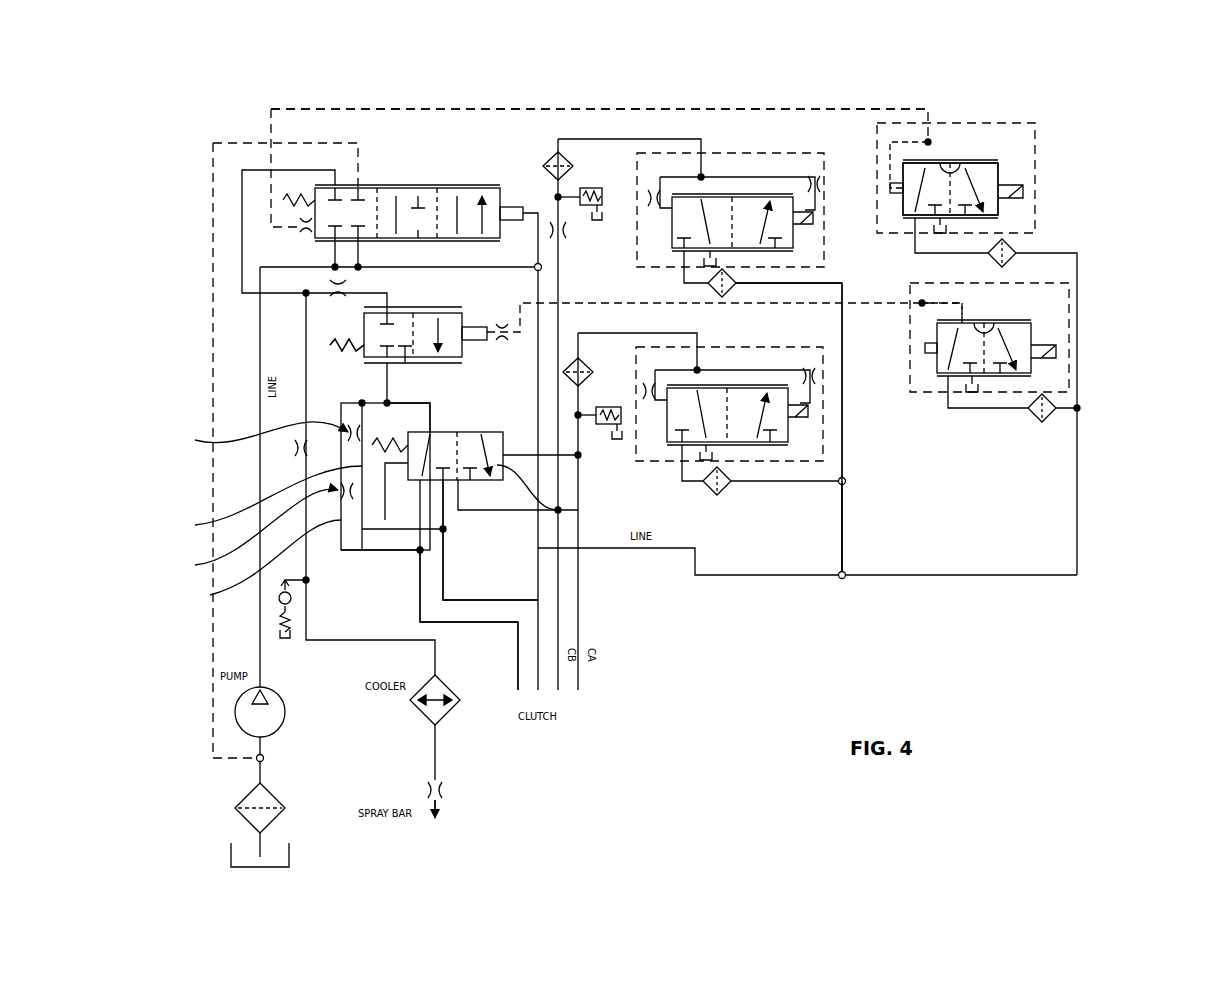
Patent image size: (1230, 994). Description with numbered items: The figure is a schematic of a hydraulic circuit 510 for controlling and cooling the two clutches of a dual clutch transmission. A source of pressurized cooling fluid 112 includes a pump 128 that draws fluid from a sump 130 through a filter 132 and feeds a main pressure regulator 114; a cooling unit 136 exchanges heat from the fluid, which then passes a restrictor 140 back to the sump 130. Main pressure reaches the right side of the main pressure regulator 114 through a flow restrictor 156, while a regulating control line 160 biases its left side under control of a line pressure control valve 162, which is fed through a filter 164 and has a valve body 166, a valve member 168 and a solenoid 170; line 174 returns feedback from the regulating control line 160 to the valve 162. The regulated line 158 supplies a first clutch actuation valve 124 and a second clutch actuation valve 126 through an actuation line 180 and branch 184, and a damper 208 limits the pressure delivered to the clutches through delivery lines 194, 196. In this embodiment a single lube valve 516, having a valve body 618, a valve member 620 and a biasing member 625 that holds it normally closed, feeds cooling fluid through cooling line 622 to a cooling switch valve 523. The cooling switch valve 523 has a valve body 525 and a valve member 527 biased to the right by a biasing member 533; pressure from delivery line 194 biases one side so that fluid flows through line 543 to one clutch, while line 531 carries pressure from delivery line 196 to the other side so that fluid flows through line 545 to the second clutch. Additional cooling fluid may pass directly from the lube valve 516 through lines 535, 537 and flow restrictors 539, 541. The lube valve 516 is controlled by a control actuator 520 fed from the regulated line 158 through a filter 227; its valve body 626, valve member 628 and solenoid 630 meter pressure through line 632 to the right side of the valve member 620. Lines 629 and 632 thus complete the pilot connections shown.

The source of pressurized cooling fluid 112 is at (180, 728).
The main pressure regulator 114 is at (432, 160).
The first clutch actuation valve 124 is at (825, 410).
The second clutch actuation valve 126 is at (742, 145).
The pump 128 is at (284, 712).
The sump 130 is at (262, 867).
The filter 132 is at (238, 797).
The cooling unit 136 is at (450, 712).
The restrictor 140 is at (445, 795).
The flow restrictor 156 is at (543, 222).
The regulated line 158 is at (705, 575).
The regulating control line 160 is at (315, 109).
The line pressure control valve 162 is at (1043, 168).
The filter 164 is at (1012, 245).
The valve body 166 is at (962, 163).
The valve member 168 is at (990, 172).
The solenoid 170 is at (1012, 195).
The line 174 is at (912, 142).
The actuation line 180 is at (842, 526).
The branch 184 is at (842, 438).
The delivery line 194 is at (612, 333).
The delivery line 196 is at (558, 287).
The damper 208 is at (580, 188).
The filter 227 is at (1036, 420).
The hydraulic circuit 510 is at (195, 128).
The lube valve 516 is at (410, 300).
The control actuator 520 is at (1090, 338).
The cooling switch valve 523 is at (482, 425).
The valve body 525 is at (458, 473).
The valve member 527 is at (560, 510).
The line 531 is at (460, 512).
The biasing member 533 is at (390, 440).
The line 535 is at (256, 500).
The line 537 is at (253, 562).
The flow restrictor 539 is at (249, 439).
The flow restrictor 541 is at (244, 532).
The line 543 is at (445, 566).
The line 545 is at (420, 580).
The valve body 618 is at (405, 352).
The valve member 620 is at (478, 315).
The cooling line 622 is at (390, 392).
The biasing member 625 is at (364, 345).
The valve body 626 is at (1005, 328).
The valve member 628 is at (1005, 336).
The fluid line 629 is at (566, 468).
The solenoid 630 is at (1043, 358).
The line 632 is at (745, 283).